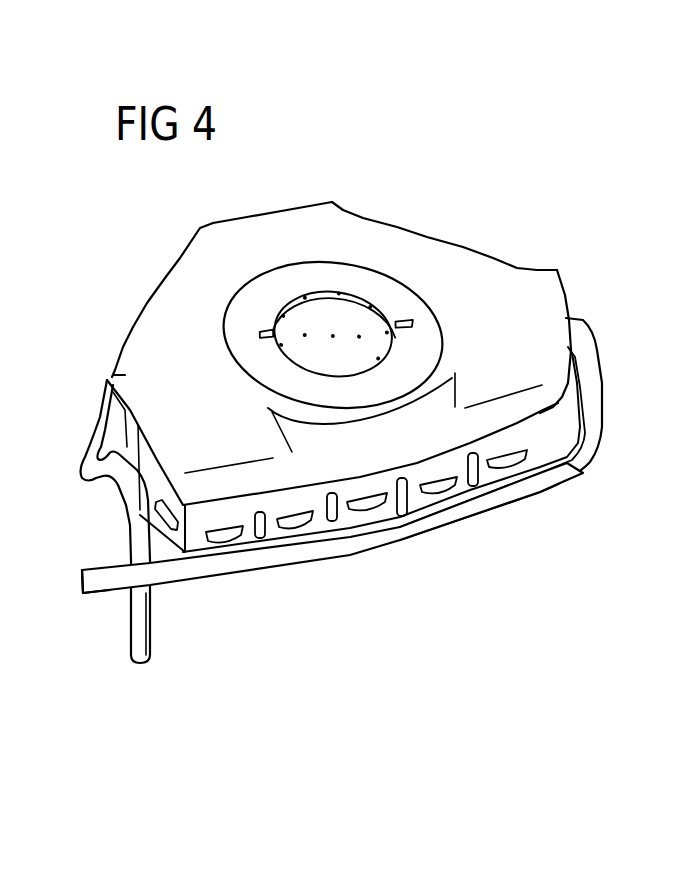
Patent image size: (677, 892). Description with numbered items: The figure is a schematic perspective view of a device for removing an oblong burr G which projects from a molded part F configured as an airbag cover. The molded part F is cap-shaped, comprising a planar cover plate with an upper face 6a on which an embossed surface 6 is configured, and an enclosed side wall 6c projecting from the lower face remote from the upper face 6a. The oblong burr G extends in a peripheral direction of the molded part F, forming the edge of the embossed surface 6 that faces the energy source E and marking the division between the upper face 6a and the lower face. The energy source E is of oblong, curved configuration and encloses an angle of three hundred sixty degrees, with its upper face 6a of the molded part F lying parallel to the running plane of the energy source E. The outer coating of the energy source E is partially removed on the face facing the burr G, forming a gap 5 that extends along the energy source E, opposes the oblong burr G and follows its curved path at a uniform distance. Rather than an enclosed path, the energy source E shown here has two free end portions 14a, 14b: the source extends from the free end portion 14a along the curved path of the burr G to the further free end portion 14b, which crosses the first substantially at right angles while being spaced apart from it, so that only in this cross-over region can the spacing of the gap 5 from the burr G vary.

The embossed surface 6 is at (443, 277).
The molded part F is at (495, 255).
The upper face 6a is at (527, 307).
The gap 5 is at (583, 417).
The side wall 6c is at (495, 442).
The oblong burr G is at (417, 463).
The energy source E is at (298, 563).
The free end portion 14a is at (103, 577).
The further free end portion 14b is at (150, 657).